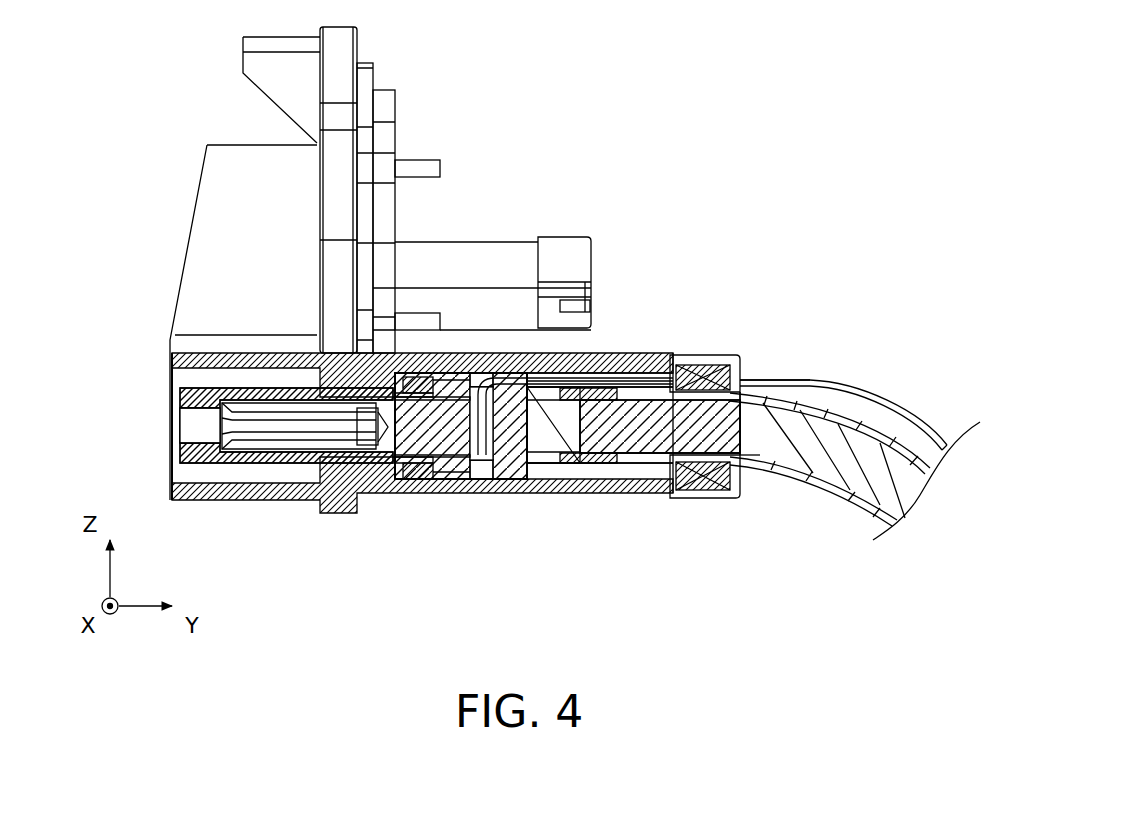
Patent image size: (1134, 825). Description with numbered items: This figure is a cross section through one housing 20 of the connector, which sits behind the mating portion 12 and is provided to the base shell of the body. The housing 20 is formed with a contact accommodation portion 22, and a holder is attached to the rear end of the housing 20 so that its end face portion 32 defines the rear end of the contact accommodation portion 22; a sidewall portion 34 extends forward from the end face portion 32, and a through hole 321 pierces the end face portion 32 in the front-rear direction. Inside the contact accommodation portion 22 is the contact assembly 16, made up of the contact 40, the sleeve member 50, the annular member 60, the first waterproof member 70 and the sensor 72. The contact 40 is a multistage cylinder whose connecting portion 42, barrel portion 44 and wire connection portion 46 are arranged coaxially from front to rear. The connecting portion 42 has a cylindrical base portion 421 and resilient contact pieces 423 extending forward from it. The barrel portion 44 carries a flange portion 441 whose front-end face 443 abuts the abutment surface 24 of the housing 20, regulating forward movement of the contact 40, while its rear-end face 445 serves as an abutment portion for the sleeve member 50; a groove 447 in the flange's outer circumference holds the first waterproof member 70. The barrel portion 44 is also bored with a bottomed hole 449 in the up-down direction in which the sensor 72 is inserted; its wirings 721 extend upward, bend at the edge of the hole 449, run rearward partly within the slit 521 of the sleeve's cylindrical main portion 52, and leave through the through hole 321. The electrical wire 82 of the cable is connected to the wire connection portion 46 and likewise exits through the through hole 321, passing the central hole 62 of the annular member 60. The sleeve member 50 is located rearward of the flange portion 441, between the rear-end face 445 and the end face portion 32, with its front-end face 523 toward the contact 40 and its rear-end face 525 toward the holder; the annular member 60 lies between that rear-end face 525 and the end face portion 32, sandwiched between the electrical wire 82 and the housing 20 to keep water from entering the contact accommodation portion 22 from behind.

The mating portion 12 is at (190, 203).
The first waterproof member 70 is at (423, 360).
The housing 20 is at (435, 493).
The base portion 421 is at (300, 362).
The connecting portion 42 is at (286, 425).
The contact pieces 423 is at (223, 435).
The barrel portion 44 is at (502, 479).
The contact 40 is at (461, 426).
The flange portion 441 is at (442, 377).
The hole 449 is at (487, 377).
The rear-end face 445 is at (480, 375).
The front-end face 443 is at (373, 493).
The groove 447 is at (417, 493).
The abutment surface 24 is at (402, 493).
The sensor 72 is at (543, 378).
The contact accommodation portion 22 is at (578, 493).
The main portion 52 is at (597, 493).
The sleeve member 50 is at (633, 425).
The slit 521 is at (593, 375).
The rear-end face 525 is at (692, 470).
The front-end face 523 is at (452, 493).
The wire connection portion 46 is at (622, 493).
The contact assembly 16 is at (536, 493).
The annular member 60 is at (693, 355).
The sidewall portion 34 is at (707, 355).
The end face portion 32 is at (745, 485).
The electrical wire 82 is at (843, 470).
The central hole 62 is at (752, 466).
The through hole 321 is at (746, 373).
The wirings 721 is at (890, 382).